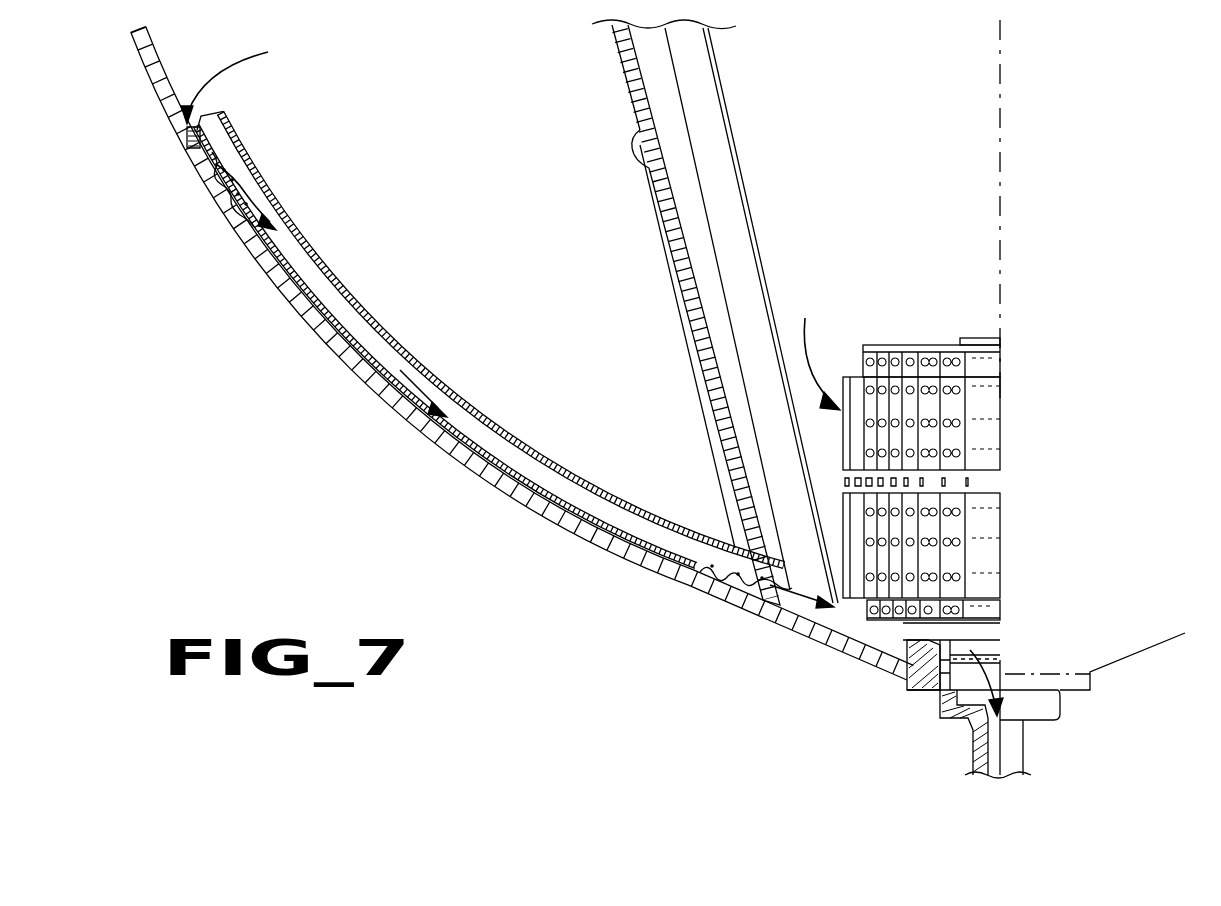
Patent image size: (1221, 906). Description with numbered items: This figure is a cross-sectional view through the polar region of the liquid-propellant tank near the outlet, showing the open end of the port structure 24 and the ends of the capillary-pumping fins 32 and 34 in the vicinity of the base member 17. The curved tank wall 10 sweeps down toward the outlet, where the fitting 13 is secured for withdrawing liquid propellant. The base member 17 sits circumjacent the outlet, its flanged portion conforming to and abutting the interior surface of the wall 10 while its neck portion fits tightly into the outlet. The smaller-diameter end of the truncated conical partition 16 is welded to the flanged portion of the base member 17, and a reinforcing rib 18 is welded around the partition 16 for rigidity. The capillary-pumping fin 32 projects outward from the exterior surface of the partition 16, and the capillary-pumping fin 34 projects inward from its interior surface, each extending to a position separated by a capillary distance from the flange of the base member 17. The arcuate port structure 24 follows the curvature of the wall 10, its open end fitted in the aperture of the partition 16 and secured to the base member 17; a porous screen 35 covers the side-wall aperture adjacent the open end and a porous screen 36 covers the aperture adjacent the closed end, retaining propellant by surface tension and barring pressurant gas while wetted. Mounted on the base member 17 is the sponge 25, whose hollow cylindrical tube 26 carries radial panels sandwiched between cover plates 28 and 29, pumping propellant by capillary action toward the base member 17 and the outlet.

The wall 10 is at (285, 283).
The fitting 13 is at (944, 718).
The truncated conical partition 16 is at (610, 46).
The base member 17 is at (824, 638).
The reinforcing rib 18 is at (636, 138).
The port structure 24 is at (300, 229).
The sponge 25 is at (910, 326).
The cylindrical tube 26 is at (978, 338).
The cover plate 28 is at (876, 344).
The cover plate 29 is at (906, 666).
The capillary-pumping fin 32 is at (720, 442).
The capillary-pumping fin 34 is at (719, 161).
The porous screen 35 is at (706, 580).
The porous screen 36 is at (202, 196).